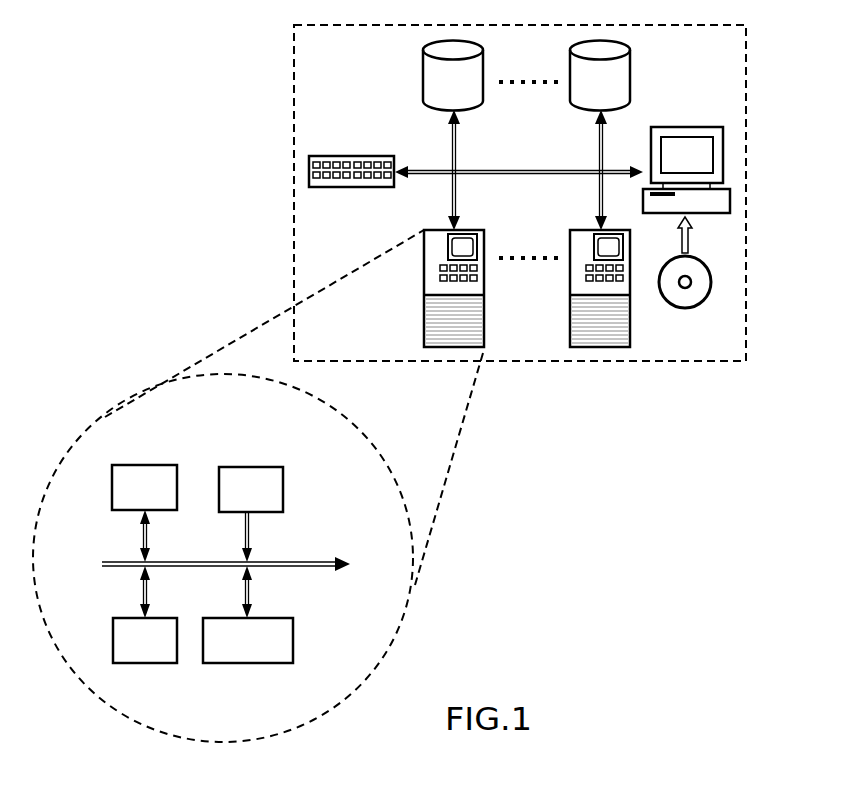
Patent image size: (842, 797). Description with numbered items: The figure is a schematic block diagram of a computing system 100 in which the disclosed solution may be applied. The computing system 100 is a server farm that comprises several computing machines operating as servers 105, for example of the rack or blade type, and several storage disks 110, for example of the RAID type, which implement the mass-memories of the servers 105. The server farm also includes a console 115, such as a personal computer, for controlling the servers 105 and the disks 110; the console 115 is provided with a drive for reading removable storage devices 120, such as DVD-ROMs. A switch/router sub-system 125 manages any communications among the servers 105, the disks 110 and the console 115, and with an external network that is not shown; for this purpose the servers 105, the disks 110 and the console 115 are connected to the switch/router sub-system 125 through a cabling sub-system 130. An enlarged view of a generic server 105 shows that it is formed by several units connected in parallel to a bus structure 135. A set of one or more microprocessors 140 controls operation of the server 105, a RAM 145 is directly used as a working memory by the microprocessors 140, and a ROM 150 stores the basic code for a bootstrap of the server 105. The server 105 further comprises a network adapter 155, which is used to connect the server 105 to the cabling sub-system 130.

The computing system 100 is at (436, 193).
The server 105 is at (492, 288).
The storage disk 110 is at (491, 76).
The console 115 is at (690, 151).
The removable storage device 120 is at (701, 283).
The switch/router sub-system 125 is at (351, 152).
The cabling sub-system 130 is at (519, 170).
The bus structure 135 is at (248, 577).
The microprocessors 140 is at (167, 499).
The RAM 145 is at (156, 636).
The ROM 150 is at (273, 499).
The network adapter 155 is at (260, 636).